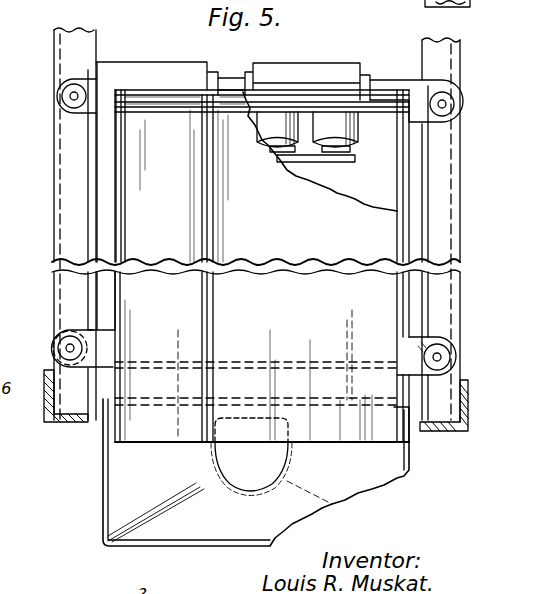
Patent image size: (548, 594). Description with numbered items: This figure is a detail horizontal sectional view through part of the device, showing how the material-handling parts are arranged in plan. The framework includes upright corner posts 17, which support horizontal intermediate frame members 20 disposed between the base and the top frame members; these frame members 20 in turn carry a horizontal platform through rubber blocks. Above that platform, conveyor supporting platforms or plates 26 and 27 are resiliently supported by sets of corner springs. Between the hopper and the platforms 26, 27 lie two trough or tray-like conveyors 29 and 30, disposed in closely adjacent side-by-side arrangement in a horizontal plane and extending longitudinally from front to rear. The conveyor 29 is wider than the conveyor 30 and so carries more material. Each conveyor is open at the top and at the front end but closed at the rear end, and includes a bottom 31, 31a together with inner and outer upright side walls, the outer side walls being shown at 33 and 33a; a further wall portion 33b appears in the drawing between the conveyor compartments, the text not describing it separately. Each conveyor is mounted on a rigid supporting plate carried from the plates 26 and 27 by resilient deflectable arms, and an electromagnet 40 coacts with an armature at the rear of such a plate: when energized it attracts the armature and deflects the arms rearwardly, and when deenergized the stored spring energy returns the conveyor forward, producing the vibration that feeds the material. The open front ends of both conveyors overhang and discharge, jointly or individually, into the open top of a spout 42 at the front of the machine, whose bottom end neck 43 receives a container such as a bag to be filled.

The front upright corner post 17 is at (48, 424).
The horizontal intermediate frame member 20 is at (254, 225).
The conveyor supporting platform 26 is at (308, 72).
The conveyor supporting platform 27 is at (180, 60).
The trough-like conveyor 29 is at (395, 239).
The trough-like conveyor 30 is at (280, 256).
The conveyor bottom 31 is at (262, 357).
The conveyor bottom 31a is at (164, 357).
The outer upright side wall 33 is at (180, 90).
The outer upright side wall 33a is at (118, 247).
The partition wall 33b is at (198, 163).
The electromagnet 40 is at (328, 128).
The spout 42 is at (238, 472).
The bottom end neck 43 is at (232, 480).